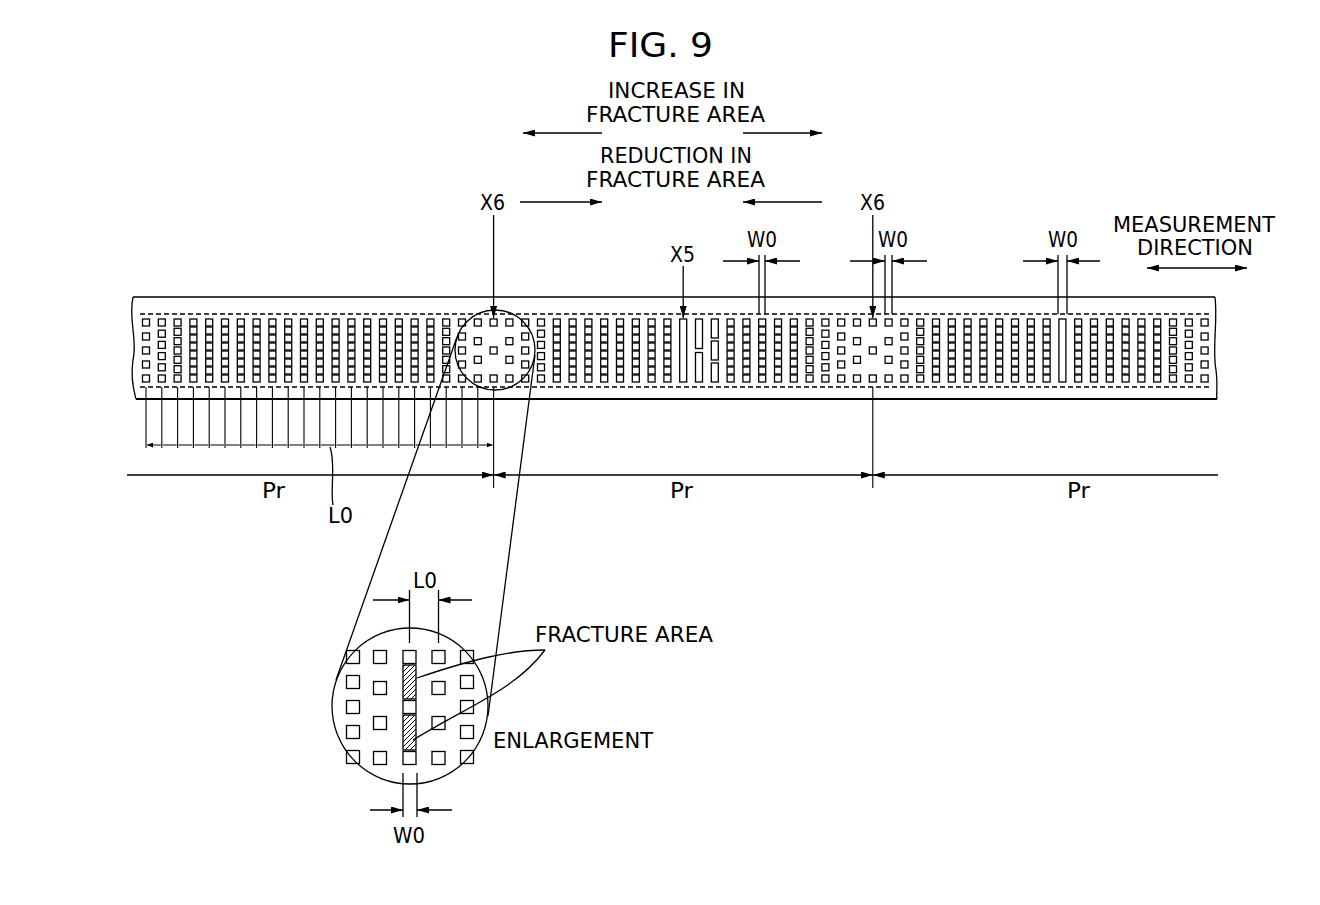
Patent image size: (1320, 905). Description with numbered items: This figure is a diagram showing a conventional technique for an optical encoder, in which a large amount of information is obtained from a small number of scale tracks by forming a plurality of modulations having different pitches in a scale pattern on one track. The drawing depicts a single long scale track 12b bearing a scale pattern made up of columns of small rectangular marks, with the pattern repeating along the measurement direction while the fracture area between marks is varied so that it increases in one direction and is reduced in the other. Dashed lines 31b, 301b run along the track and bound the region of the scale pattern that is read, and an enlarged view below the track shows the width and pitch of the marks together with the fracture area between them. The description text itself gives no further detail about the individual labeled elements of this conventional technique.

The print medium / recording medium 12b is at (218, 300).
The measurement line 31b is at (676, 423).
The measurement line 301b is at (1170, 432).